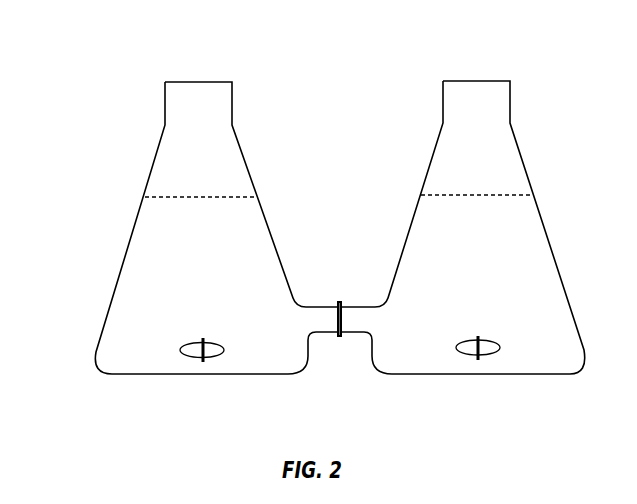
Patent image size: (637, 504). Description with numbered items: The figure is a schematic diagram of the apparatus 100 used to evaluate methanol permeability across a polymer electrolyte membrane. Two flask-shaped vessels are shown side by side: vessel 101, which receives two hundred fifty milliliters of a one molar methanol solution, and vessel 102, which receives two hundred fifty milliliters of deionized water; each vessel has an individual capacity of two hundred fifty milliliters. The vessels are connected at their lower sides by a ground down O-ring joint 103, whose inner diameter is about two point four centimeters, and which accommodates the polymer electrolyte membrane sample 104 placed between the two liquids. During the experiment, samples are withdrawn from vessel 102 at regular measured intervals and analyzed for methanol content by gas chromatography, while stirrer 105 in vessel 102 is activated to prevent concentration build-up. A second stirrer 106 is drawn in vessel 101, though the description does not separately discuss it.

The apparatus 100 is at (111, 68).
The vessel 101 is at (153, 162).
The vessel 102 is at (524, 160).
The ground down O-ring joint 103 is at (340, 338).
The polymer electrolyte membrane sample 104 is at (336, 310).
The stirrer 105 is at (492, 355).
The stirrer in first flask 106 is at (192, 360).